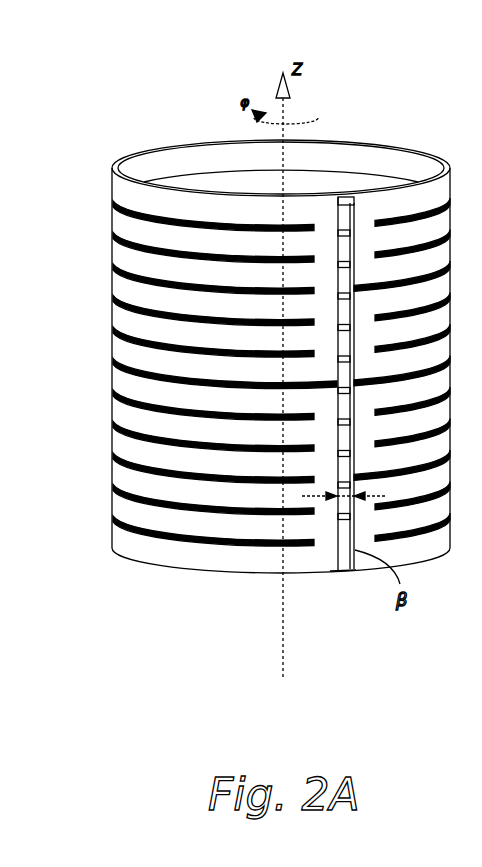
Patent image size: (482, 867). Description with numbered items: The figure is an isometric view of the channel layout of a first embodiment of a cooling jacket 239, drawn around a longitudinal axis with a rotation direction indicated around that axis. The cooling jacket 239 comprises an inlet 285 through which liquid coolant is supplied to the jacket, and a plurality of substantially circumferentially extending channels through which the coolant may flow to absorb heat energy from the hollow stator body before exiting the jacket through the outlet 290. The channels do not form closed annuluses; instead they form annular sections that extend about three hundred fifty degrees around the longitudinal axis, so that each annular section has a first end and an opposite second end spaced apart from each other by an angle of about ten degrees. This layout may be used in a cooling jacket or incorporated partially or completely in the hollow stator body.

The cooling jacket 239 is at (413, 130).
The inlet 285 is at (345, 200).
The outlet 290 is at (342, 569).